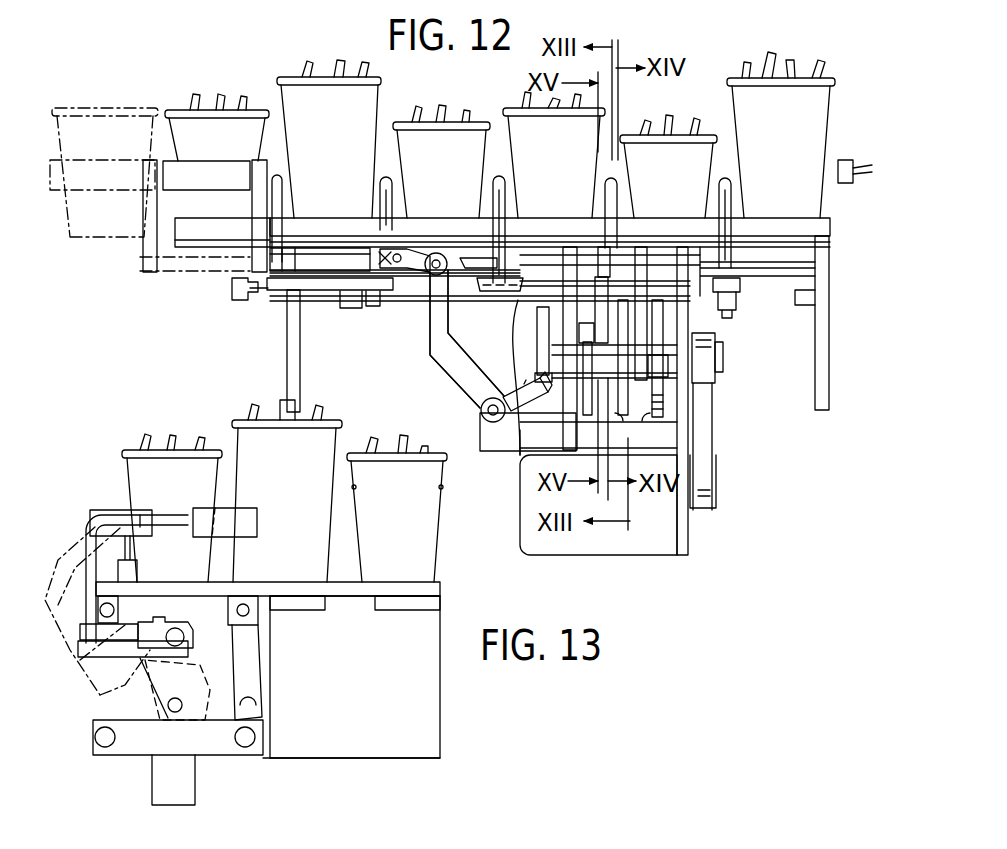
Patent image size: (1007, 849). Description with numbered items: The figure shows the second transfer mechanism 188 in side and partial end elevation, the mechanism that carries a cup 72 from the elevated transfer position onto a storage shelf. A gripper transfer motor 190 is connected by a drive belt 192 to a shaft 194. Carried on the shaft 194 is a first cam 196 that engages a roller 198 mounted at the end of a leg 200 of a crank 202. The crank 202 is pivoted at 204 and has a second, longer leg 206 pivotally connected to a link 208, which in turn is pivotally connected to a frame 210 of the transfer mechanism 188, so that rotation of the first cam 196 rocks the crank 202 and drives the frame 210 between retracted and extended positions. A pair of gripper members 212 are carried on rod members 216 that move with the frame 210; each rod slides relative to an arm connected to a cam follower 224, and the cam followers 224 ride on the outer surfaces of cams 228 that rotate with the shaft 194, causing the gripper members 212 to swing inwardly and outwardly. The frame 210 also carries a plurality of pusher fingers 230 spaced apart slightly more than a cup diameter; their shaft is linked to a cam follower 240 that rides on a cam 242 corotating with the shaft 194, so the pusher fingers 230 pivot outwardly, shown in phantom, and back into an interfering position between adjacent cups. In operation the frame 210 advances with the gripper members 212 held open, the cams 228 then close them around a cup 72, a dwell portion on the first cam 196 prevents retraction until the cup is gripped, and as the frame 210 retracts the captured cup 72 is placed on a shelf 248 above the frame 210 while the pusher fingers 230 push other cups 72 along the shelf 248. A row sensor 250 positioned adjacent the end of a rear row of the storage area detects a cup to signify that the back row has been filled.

In FIG. 12, the cup 72 is at (367, 100).
In FIG. 13, the cup 72 is at (420, 556).
In FIG. 12, the transfer mechanism 188 is at (283, 343).
In FIG. 12, the gripper transfer motor 190 is at (632, 543).
In FIG. 12, the drive belt 192 is at (708, 432).
In FIG. 12, the shaft 194 is at (724, 356).
In FIG. 13, the shaft 194 is at (173, 710).
In FIG. 12, the first cam 196 is at (542, 328).
In FIG. 12, the roller 198 is at (560, 425).
In FIG. 12, the leg 200 is at (540, 396).
In FIG. 12, the crank 202 is at (447, 377).
In FIG. 12, the pivot 204 is at (481, 412).
In FIG. 12, the second leg 206 is at (441, 314).
In FIG. 12, the link 208 is at (418, 250).
In FIG. 12, the frame 210 is at (382, 252).
In FIG. 12, the gripper members 212 is at (190, 172).
In FIG. 13, the gripper members 212 is at (112, 512).
In FIG. 12, the rod members 216 is at (320, 290).
In FIG. 12, the cam follower 224 is at (664, 364).
In FIG. 12, the cams 228 is at (641, 431).
In FIG. 12, the pusher fingers 230 is at (508, 205).
In FIG. 13, the pusher fingers 230 is at (96, 532).
In FIG. 12, the cam follower 240 is at (578, 327).
In FIG. 12, the cam 242 is at (580, 387).
In FIG. 13, the shelf 248 is at (336, 582).
In FIG. 12, the row sensor 250 is at (845, 160).